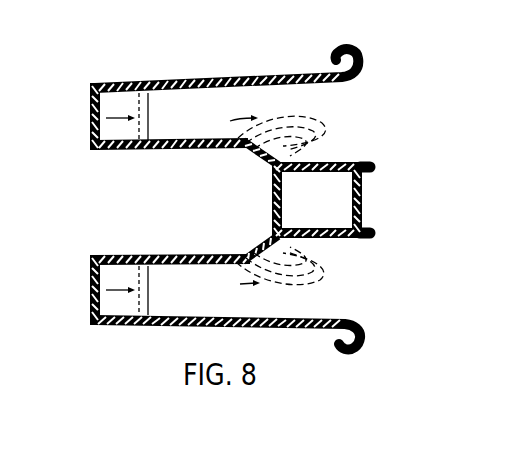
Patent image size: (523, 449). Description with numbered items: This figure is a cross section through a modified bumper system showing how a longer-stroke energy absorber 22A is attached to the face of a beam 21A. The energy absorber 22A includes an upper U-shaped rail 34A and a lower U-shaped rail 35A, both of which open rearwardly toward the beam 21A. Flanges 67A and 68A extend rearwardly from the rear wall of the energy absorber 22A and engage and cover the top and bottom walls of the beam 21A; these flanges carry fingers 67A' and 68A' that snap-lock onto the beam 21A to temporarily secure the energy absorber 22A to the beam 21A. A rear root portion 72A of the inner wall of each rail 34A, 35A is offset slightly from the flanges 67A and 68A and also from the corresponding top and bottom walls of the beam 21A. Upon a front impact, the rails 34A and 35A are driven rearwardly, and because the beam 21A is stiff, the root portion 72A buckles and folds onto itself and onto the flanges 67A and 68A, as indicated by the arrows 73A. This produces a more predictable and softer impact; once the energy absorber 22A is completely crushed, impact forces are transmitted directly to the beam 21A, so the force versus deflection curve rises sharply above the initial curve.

The energy absorber 22A is at (155, 72).
The upper U-shaped rail 34A is at (117, 82).
The lower U-shaped rail 35A is at (123, 327).
The root portion 72A is at (270, 155).
The arrows 73A is at (218, 275).
The beam 21A is at (356, 195).
The upper flange 67A is at (336, 139).
The upper finger 67A' is at (400, 162).
The lower flange 68A is at (337, 255).
The lower finger 68A' is at (400, 235).